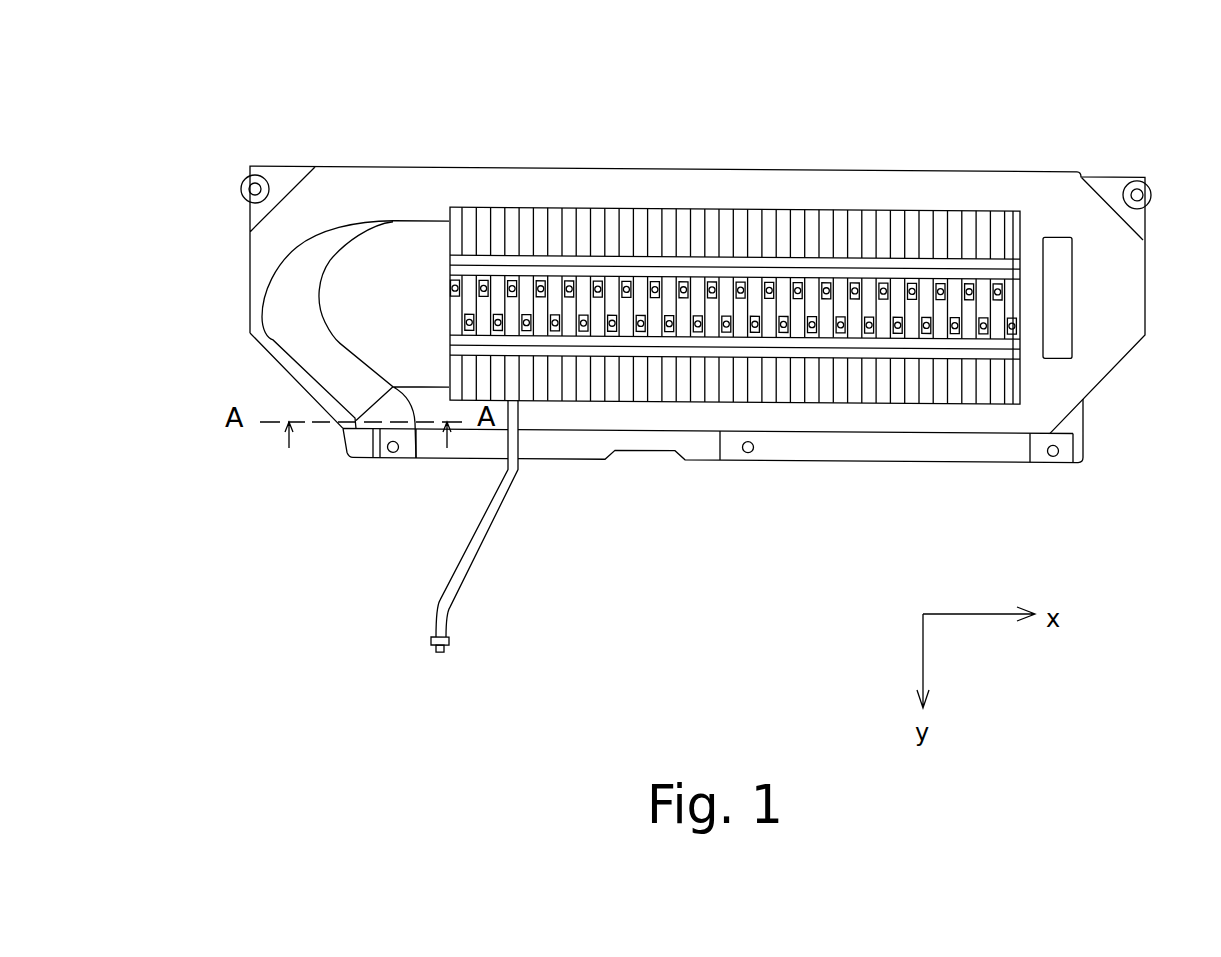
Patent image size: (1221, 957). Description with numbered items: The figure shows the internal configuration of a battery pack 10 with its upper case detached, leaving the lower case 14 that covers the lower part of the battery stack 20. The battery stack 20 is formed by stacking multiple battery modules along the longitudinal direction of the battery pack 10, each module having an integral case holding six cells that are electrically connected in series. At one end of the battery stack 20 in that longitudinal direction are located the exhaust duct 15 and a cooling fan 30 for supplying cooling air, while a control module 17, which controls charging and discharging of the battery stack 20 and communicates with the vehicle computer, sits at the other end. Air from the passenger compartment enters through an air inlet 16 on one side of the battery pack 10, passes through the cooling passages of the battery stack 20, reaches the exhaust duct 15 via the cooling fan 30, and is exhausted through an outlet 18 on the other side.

The battery pack 10 is at (1010, 84).
The lower case 14 is at (447, 457).
The exhaust duct 15 is at (343, 458).
The air inlet 16 is at (250, 322).
The control module 17 is at (1057, 333).
The outlet 18 is at (382, 458).
The battery stack 20 is at (790, 208).
The cooling fan 30 is at (305, 272).